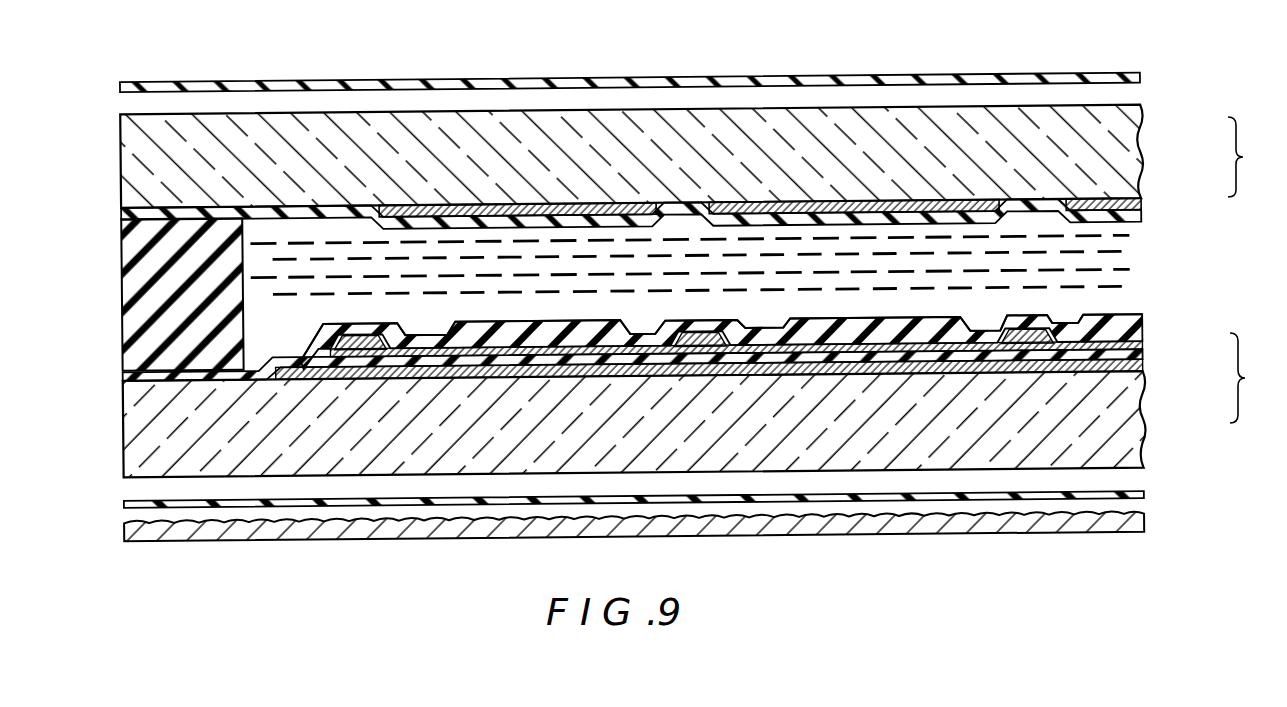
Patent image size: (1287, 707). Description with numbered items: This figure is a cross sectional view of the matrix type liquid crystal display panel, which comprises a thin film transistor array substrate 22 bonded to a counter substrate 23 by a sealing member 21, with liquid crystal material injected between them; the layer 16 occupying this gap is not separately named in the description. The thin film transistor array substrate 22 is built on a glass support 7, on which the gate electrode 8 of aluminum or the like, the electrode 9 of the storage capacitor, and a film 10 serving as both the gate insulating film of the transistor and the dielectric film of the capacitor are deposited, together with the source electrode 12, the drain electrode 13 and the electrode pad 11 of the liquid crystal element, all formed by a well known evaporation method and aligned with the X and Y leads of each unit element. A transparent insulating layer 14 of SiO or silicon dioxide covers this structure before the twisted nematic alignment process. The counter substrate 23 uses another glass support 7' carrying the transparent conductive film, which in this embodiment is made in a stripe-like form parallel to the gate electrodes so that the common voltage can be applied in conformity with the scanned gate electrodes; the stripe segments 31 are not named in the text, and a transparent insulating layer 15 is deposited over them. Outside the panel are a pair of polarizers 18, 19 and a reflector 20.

The polarizer 19 is at (1142, 78).
The glass support 7' is at (667, 156).
The counter substrate 23 is at (1251, 157).
The color filter layer 31 is at (622, 200).
The transparent insulating layer 15 is at (1133, 215).
The liquid crystal layer 16 is at (1123, 255).
The transparent insulating layer 14 is at (1037, 317).
The drain electrode 13 is at (1078, 317).
The source electrode 12 is at (1117, 337).
The electrode pad 11 is at (1130, 353).
The gate insulating film 10 is at (1133, 367).
The glass support 7 is at (666, 424).
The thin film transistor array substrate 22 is at (1253, 378).
The polarizer 18 is at (1142, 492).
The reflector 20 is at (1142, 525).
The sealing member 21 is at (150, 320).
The capacitor electrode 9 is at (897, 367).
The gate electrode 8 is at (1016, 362).